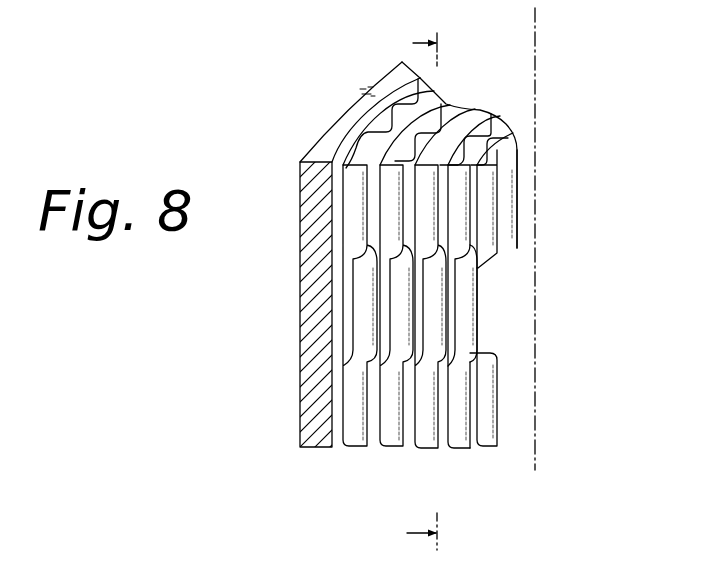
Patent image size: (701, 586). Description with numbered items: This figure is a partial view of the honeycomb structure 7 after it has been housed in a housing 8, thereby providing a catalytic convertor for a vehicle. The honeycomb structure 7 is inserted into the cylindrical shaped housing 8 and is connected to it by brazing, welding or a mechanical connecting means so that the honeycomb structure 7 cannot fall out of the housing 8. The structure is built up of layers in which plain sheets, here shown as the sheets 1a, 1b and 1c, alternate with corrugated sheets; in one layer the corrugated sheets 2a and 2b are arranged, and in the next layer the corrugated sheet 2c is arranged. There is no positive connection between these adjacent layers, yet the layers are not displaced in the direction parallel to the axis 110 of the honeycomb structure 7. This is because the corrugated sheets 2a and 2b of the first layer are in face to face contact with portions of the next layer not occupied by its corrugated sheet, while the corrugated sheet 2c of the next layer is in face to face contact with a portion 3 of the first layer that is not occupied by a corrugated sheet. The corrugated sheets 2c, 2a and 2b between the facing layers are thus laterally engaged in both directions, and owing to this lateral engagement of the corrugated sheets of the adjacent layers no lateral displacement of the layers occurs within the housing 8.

The housing 8 is at (338, 103).
The honeycomb structure 7 is at (467, 102).
The axis 110 is at (536, 42).
The plate element 1a is at (509, 331).
The plate element 1b is at (531, 324).
The plate element 1c is at (408, 448).
The corrugated sheet 2a is at (517, 198).
The corrugated sheet 2b is at (498, 407).
The corrugated sheet 2c is at (480, 337).
The portion not occupied by a corrugated sheet 3 is at (480, 280).